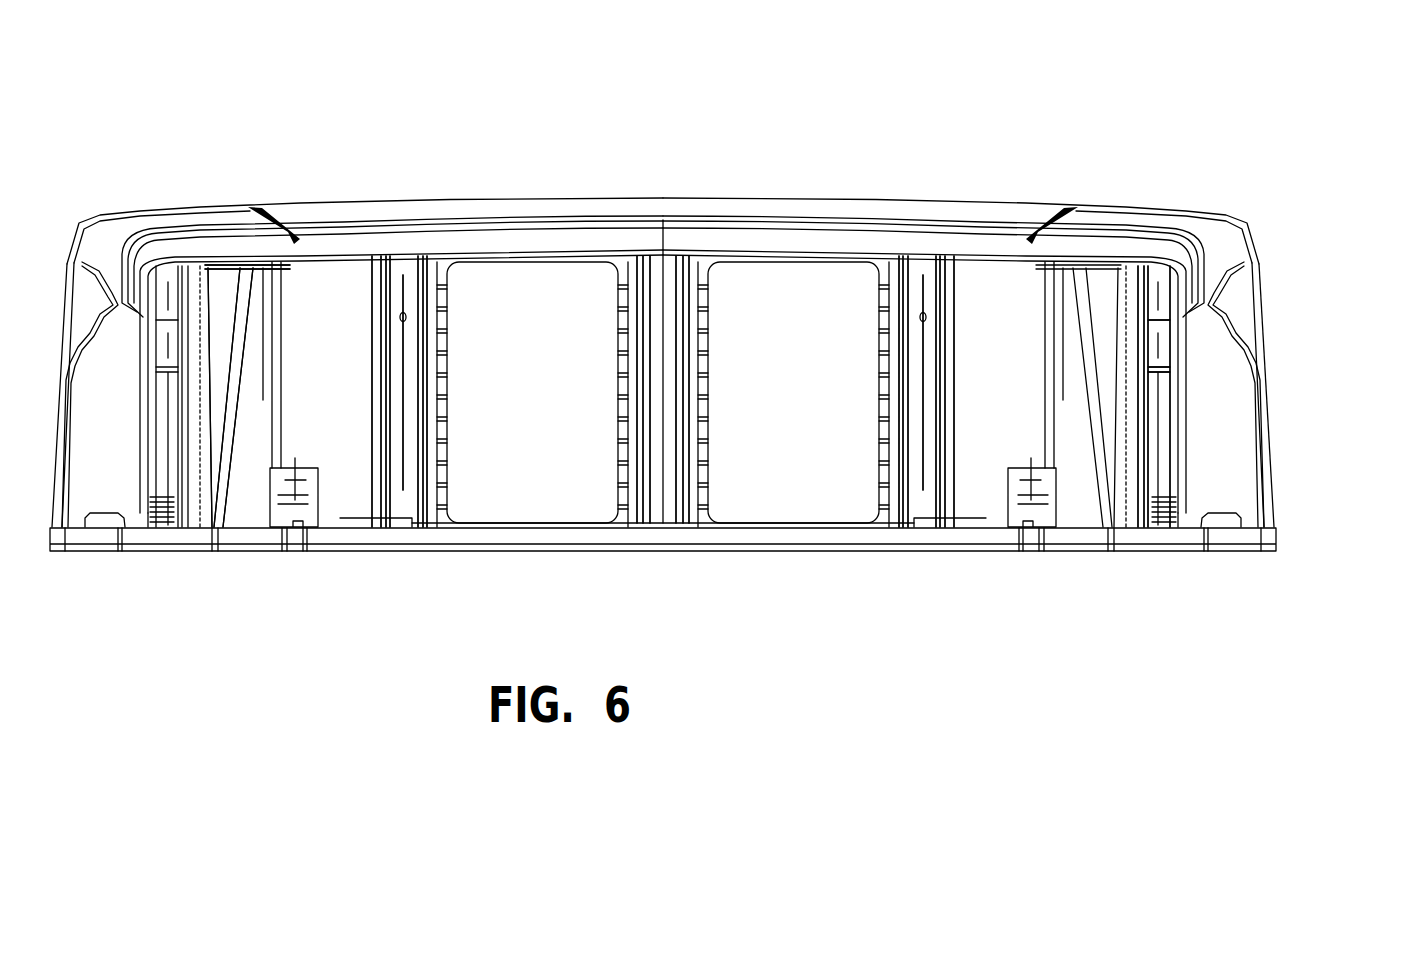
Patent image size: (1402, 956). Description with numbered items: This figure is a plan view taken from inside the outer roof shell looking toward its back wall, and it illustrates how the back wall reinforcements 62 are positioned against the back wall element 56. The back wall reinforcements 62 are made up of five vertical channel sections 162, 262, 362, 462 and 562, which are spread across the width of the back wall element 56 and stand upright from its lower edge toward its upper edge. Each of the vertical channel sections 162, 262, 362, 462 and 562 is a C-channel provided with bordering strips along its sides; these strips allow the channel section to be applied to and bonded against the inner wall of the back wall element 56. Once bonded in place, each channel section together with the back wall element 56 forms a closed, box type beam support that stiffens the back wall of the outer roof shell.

The back wall element 56 is at (747, 492).
The back wall reinforcements 62 is at (643, 297).
The vertical channel section 162 is at (210, 457).
The vertical channel section 262 is at (428, 285).
The vertical channel section 362 is at (665, 288).
The vertical channel section 462 is at (920, 285).
The vertical channel section 562 is at (1260, 353).